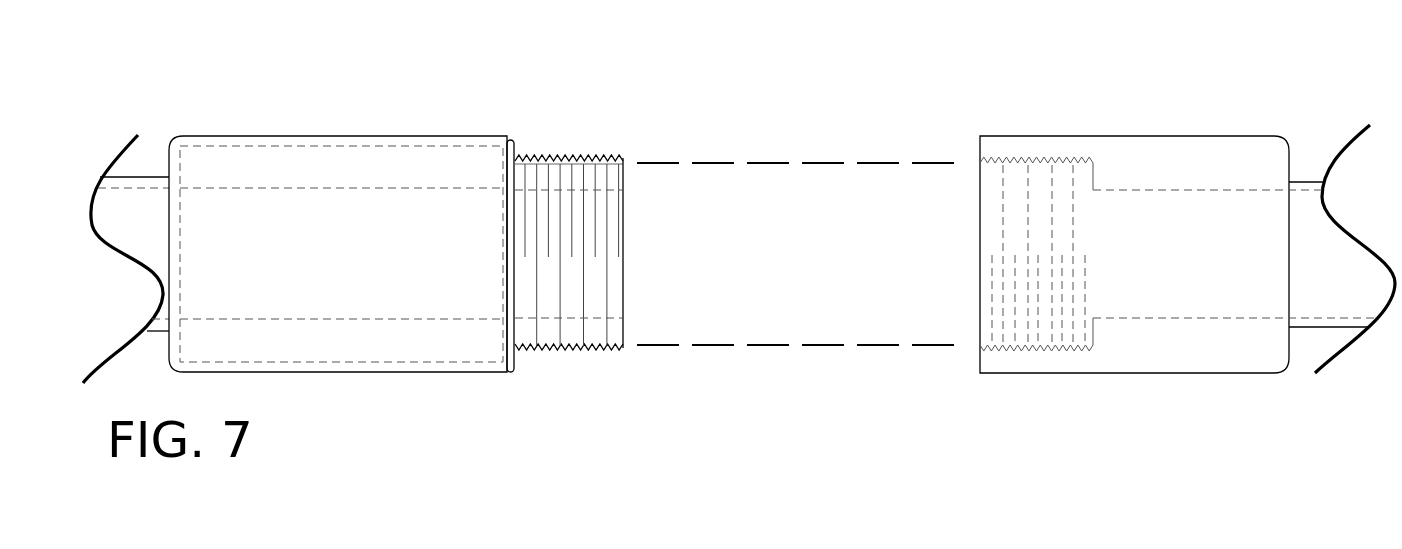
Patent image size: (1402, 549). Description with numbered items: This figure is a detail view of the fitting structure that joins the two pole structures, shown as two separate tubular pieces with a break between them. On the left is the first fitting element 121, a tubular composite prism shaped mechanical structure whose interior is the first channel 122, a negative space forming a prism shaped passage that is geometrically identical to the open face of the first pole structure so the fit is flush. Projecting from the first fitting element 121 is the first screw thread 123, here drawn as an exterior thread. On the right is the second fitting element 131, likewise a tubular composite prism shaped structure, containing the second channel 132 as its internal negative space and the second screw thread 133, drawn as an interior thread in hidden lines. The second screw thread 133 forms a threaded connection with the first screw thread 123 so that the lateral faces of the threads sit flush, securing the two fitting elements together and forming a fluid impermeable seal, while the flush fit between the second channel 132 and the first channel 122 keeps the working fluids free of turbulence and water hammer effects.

The first fitting element 121 is at (218, 109).
The first channel 122 is at (367, 263).
The first screw thread 123 is at (556, 158).
The second fitting element 131 is at (1230, 122).
The second channel 132 is at (1175, 240).
The second screw thread 133 is at (1030, 210).